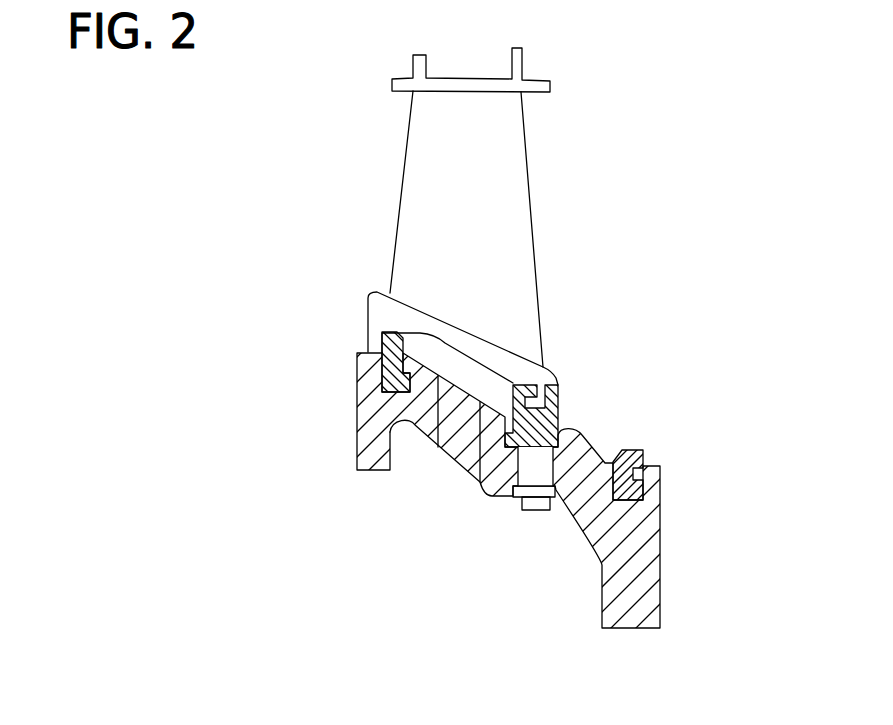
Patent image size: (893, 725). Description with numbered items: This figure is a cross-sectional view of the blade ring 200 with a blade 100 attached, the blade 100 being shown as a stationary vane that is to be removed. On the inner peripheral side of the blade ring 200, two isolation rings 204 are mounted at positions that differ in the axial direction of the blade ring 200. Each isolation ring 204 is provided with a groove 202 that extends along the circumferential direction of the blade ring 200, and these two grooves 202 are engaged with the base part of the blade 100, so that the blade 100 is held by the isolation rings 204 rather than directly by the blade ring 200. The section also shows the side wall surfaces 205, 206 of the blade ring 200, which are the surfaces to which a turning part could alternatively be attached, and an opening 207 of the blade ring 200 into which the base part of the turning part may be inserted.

The blade 100 is at (512, 203).
The blade ring 200 is at (575, 530).
The groove 202 is at (370, 349).
The isolation ring 204 is at (393, 377).
The side wall surface 205 is at (357, 433).
The side wall surface 206 is at (660, 558).
The opening 207 is at (475, 462).